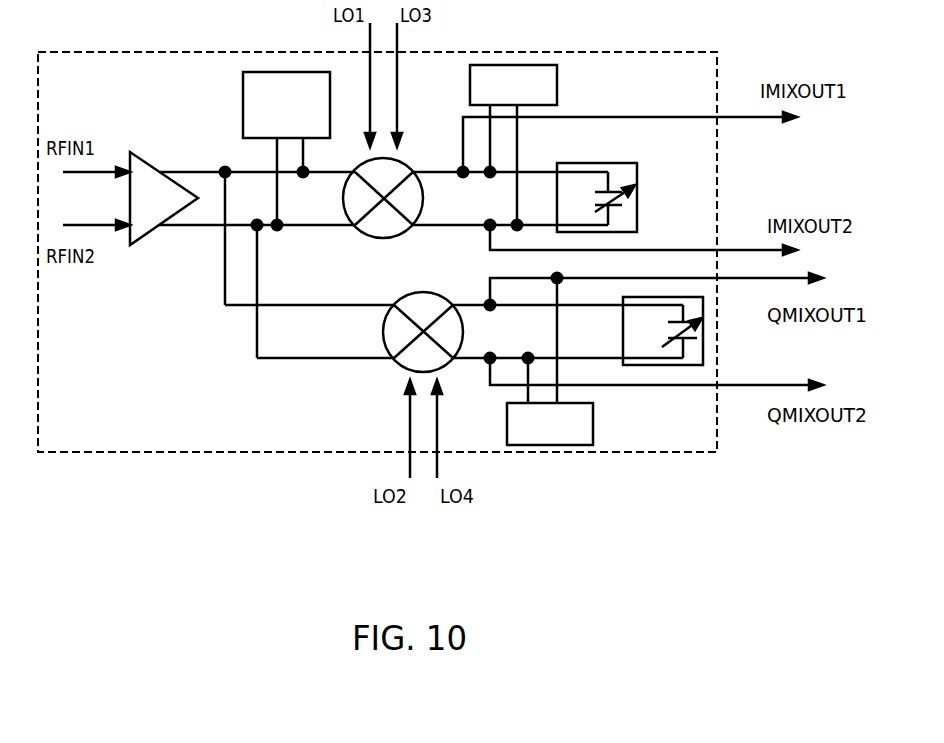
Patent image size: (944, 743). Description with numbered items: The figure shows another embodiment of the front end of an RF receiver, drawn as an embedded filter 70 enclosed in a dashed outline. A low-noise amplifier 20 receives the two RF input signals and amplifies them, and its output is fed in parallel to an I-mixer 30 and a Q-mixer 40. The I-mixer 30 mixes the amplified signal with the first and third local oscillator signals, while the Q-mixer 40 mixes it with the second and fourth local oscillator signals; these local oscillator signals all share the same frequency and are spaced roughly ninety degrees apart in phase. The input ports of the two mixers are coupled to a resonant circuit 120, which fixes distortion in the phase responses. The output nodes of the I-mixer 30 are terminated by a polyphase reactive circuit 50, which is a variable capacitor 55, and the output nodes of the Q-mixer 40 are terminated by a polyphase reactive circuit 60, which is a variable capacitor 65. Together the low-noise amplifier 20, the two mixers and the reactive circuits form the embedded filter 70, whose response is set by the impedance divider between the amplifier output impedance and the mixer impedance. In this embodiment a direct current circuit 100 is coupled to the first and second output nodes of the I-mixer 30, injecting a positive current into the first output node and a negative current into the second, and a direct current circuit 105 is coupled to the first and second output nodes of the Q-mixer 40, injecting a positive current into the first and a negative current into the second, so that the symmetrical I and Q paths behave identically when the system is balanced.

The low-noise amplifier 20 is at (164, 208).
The I-mixer 30 is at (378, 212).
The Q-mixer 40 is at (423, 320).
The polyphase reactive circuit 50 is at (615, 200).
The variable capacitor 55 is at (604, 198).
The polyphase reactive circuit 60 is at (649, 331).
The variable capacitor 65 is at (673, 331).
The embedded filter 70 is at (377, 252).
The direct current circuit 100 is at (513, 85).
The direct current circuit 105 is at (550, 424).
The resonant circuit 120 is at (286, 105).